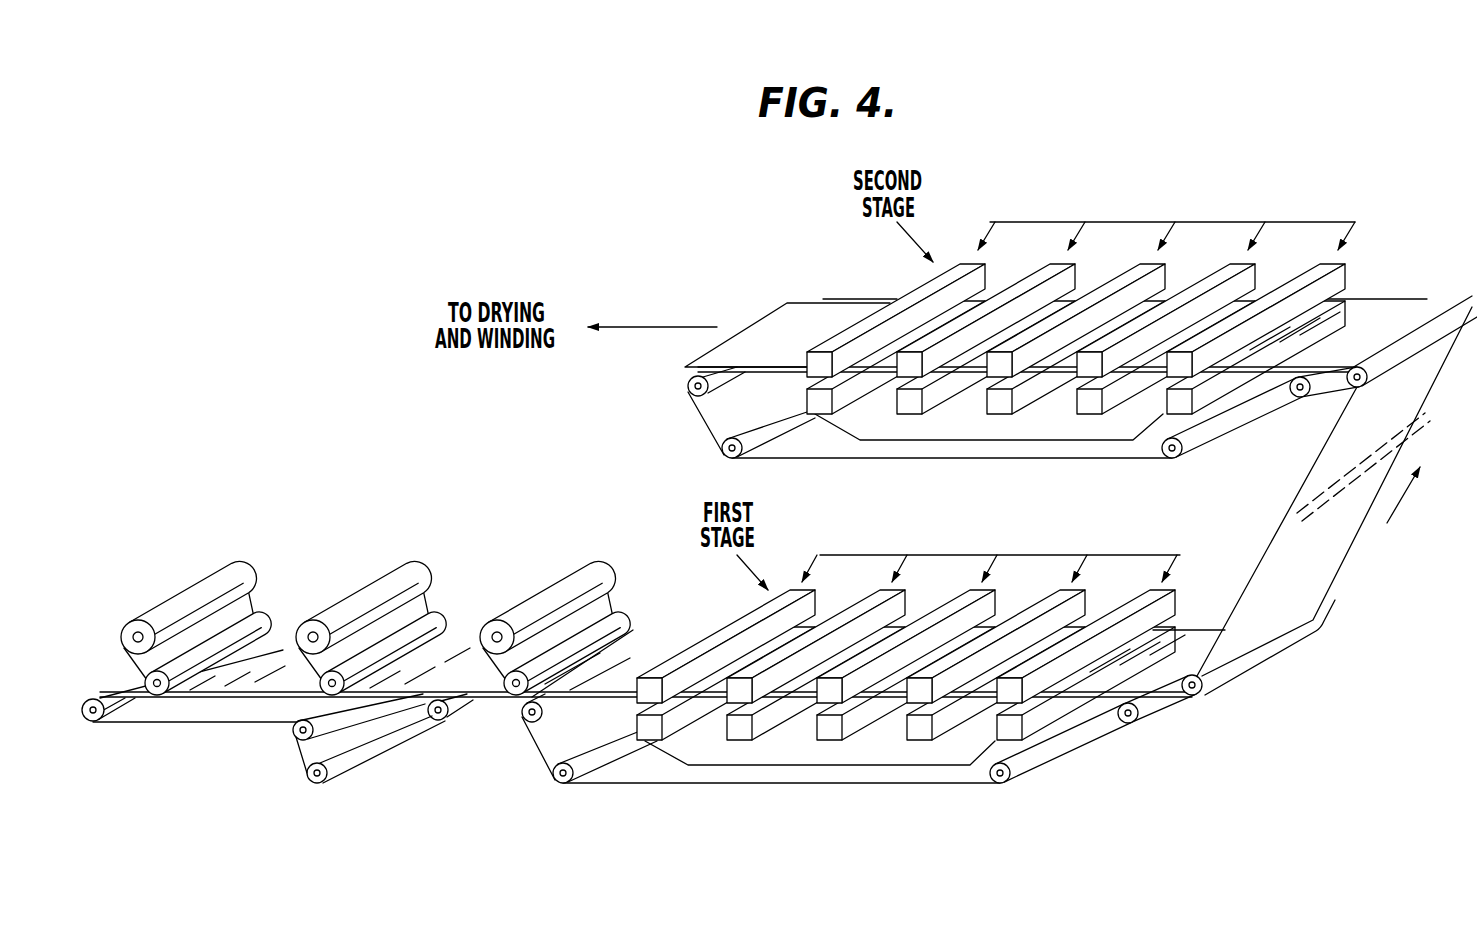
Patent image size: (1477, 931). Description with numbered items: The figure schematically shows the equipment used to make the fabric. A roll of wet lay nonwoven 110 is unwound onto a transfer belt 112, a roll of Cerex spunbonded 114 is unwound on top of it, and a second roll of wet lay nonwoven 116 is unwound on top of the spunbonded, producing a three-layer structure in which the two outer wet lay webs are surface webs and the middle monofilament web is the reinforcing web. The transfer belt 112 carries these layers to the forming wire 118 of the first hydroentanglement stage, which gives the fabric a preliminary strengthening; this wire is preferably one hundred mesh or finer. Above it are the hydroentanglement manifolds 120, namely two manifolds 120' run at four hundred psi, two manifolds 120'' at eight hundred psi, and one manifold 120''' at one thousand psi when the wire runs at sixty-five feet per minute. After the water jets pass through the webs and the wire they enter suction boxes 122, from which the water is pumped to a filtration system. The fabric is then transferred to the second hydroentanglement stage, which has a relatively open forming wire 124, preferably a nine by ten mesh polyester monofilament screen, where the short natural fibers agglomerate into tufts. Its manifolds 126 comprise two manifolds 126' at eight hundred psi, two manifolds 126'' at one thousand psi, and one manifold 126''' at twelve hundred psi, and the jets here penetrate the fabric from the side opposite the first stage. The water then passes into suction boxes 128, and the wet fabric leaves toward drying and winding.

The roll of wet lay nonwoven 110 is at (221, 569).
The transfer belt 112 is at (249, 726).
The roll of Cerex spunbonded 114 is at (388, 570).
The second roll of wet lay nonwoven 116 is at (582, 566).
The forming wire 118 is at (533, 757).
The manifolds 120' is at (772, 627).
The hydroentanglement manifolds 120 is at (915, 622).
The manifolds 120'' is at (1000, 627).
The manifold 120''' is at (1118, 637).
The suction boxes 122 is at (805, 768).
The forming wire 124 is at (692, 418).
The manifold 126''' is at (907, 296).
The manifolds 126'' is at (1028, 298).
The manifolds 126 is at (1107, 290).
The manifolds 126' is at (1216, 299).
The suction boxes 128 is at (987, 442).